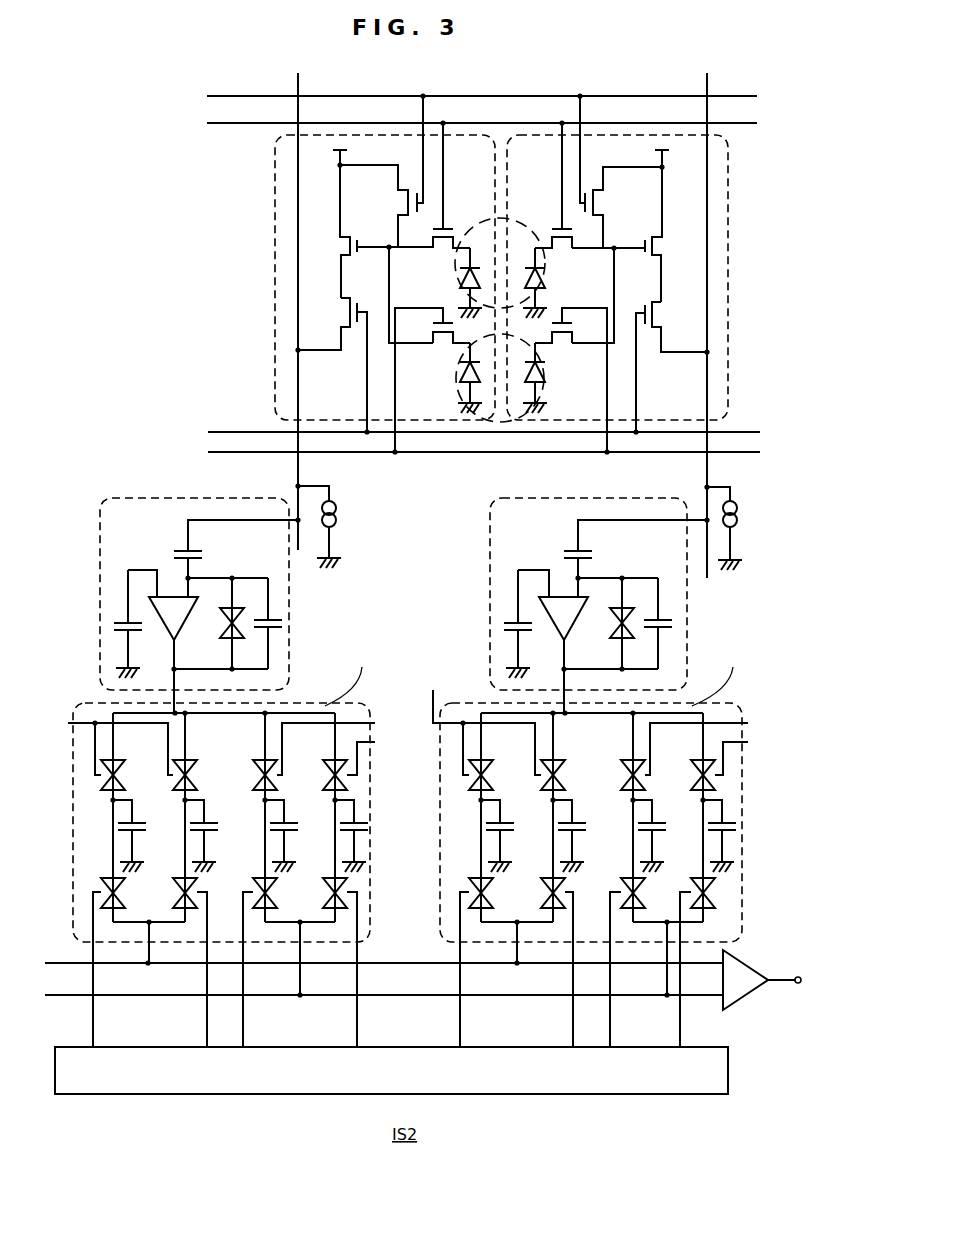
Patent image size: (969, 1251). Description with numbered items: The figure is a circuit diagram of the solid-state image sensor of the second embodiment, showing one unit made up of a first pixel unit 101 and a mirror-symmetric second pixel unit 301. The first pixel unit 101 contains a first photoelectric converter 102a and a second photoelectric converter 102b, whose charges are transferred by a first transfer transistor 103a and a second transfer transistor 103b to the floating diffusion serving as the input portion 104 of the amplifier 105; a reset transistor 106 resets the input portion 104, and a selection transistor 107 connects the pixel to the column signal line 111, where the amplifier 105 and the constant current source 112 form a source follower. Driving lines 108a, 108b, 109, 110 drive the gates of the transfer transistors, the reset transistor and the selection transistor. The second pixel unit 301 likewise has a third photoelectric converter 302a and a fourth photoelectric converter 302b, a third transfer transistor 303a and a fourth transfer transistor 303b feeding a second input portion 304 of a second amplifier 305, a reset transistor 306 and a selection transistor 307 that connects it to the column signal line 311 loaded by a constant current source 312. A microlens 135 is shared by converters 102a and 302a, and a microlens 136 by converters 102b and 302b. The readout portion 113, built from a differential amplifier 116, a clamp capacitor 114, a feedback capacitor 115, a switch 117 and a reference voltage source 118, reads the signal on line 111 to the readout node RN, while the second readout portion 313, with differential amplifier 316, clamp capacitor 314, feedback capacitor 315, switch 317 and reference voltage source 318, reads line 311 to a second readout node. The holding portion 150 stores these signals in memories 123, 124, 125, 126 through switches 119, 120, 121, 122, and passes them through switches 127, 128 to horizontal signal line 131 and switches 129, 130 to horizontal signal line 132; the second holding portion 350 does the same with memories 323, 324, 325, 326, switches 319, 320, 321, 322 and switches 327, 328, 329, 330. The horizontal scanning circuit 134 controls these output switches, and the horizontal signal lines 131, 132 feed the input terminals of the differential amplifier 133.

The first pixel unit 101 is at (733, 200).
The first photoelectric converter 102a is at (545, 284).
The second photoelectric converter 102b is at (544, 392).
The first transfer transistor 103a is at (556, 249).
The second transfer transistor 103b is at (556, 350).
The input portion 104 is at (623, 250).
The amplifier 105 is at (660, 251).
The reset transistor 106 is at (604, 203).
The selection transistor 107 is at (660, 316).
The driving line 108a is at (744, 123).
The driving line 108b is at (755, 452).
The driving line 109 is at (744, 96).
The driving line 110 is at (735, 432).
The column signal line 111 is at (711, 468).
The constant current source 112 is at (741, 509).
The readout portion 113 is at (489, 535).
The clamp capacitor 114 is at (565, 552).
The feedback capacitor 115 is at (672, 616).
The differential amplifier 116 is at (549, 615).
The switch 117 is at (610, 618).
The reference voltage source 118 is at (503, 618).
The switch 119 is at (493, 764).
The switch 120 is at (563, 775).
The switch 121 is at (624, 765).
The switch 122 is at (694, 770).
The memory 123 is at (508, 820).
The memory 124 is at (580, 820).
The memory 125 is at (660, 820).
The memory 126 is at (728, 818).
The switch 127 is at (472, 879).
The switch 128 is at (543, 879).
The switch 129 is at (623, 879).
The switch 130 is at (694, 879).
The horizontal signal line 131 is at (48, 962).
The horizontal signal line 132 is at (50, 997).
The amplifier 133 is at (750, 1000).
The horizontal scanning circuit 134 is at (730, 1072).
The microlens 135 is at (513, 222).
The microlens 136 is at (510, 425).
The holding portion 150 is at (744, 882).
The second pixel unit 301 is at (272, 203).
The third photoelectric converter 302a is at (460, 284).
The fourth photoelectric converter 302b is at (460, 392).
The third transfer transistor 303a is at (446, 249).
The fourth transfer transistor 303b is at (447, 350).
The second input portion 304 is at (381, 250).
The second amplifier 305 is at (342, 250).
The reset transistor 306 is at (403, 205).
The selection transistor 307 is at (342, 317).
The column signal line 311 is at (302, 465).
The constant current source 312 is at (340, 509).
The second readout portion 313 is at (99, 530).
The clamp capacitor 314 is at (174, 552).
The feedback capacitor 315 is at (285, 616).
The differential amplifier 316 is at (158, 617).
The switch 317 is at (219, 618).
The reference voltage source 318 is at (102, 618).
The switch 319 is at (124, 764).
The switch 320 is at (194, 775).
The switch 321 is at (256, 765).
The switch 322 is at (326, 770).
The memory 323 is at (140, 820).
The memory 324 is at (212, 820).
The memory 325 is at (292, 820).
The memory 326 is at (358, 818).
The switch 327 is at (104, 879).
The switch 328 is at (176, 879).
The switch 329 is at (256, 879).
The switch 330 is at (326, 879).
The second holding portion 350 is at (372, 882).